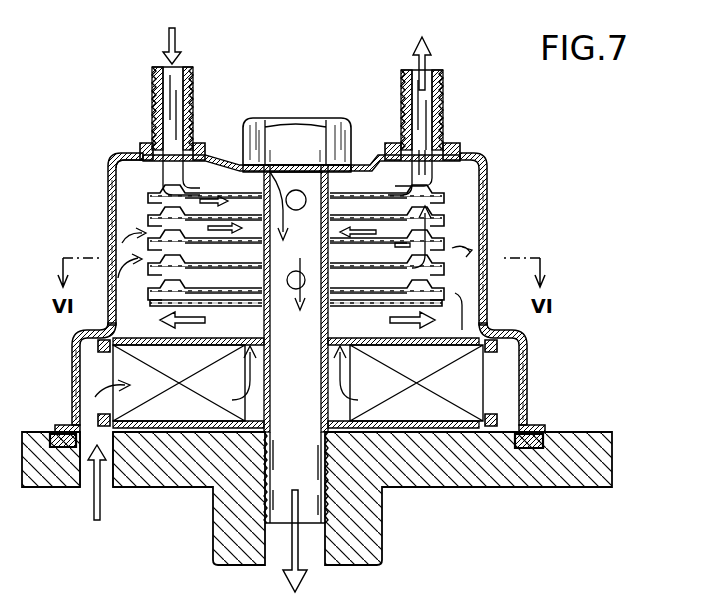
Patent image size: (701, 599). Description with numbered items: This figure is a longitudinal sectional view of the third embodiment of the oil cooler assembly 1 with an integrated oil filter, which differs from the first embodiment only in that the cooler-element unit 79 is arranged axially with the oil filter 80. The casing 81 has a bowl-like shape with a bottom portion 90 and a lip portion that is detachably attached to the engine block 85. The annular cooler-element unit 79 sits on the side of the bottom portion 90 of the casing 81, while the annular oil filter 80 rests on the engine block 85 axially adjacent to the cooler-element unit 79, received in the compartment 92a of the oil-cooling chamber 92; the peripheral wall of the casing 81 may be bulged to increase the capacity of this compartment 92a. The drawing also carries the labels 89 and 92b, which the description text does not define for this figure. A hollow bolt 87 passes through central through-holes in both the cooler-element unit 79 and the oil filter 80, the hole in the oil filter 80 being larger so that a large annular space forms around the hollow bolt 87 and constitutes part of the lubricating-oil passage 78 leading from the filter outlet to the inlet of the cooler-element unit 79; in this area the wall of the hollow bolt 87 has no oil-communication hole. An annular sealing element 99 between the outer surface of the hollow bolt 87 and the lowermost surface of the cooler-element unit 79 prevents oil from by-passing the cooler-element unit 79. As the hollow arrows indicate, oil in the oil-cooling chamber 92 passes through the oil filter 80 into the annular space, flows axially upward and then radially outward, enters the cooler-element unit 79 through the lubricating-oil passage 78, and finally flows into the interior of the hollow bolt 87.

The oil cooler assembly 1 is at (492, 164).
The lubricating-oil passage 78 is at (221, 165).
The cooler-element unit 79 is at (246, 168).
The oil filter 80 is at (128, 373).
The casing 81 is at (112, 240).
The engine block 85 is at (55, 478).
The hollow bolt 87 is at (341, 165).
The central tube 89 is at (313, 535).
The bottom portion 90 is at (228, 186).
The oil-cooling chamber 92 is at (128, 212).
The compartment 92a is at (100, 356).
The housing upper portion 92b is at (128, 183).
The annular sealing element 99 is at (245, 312).